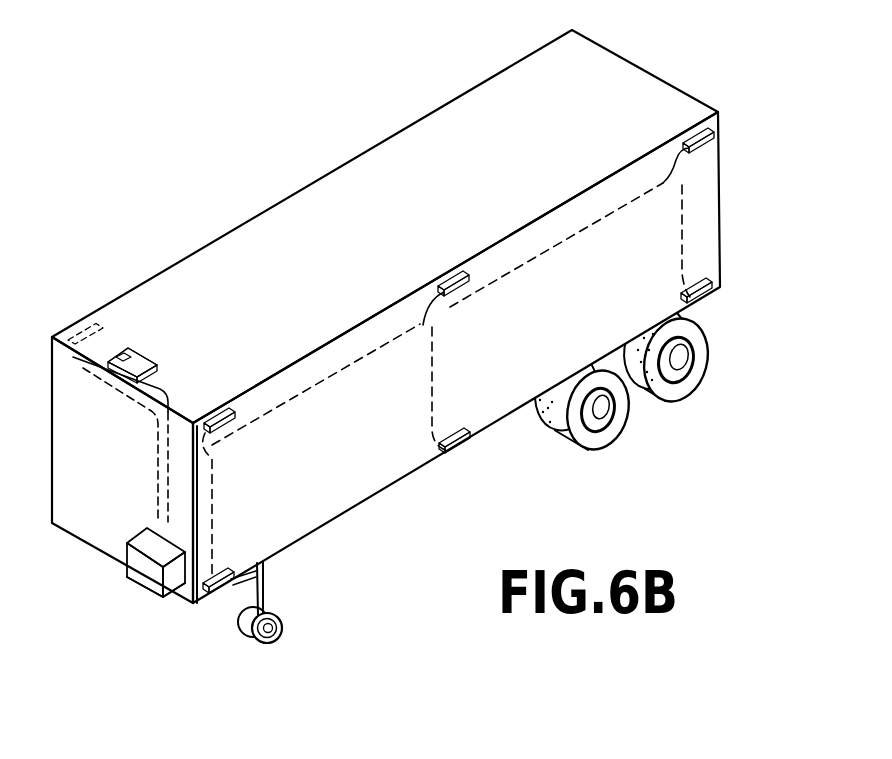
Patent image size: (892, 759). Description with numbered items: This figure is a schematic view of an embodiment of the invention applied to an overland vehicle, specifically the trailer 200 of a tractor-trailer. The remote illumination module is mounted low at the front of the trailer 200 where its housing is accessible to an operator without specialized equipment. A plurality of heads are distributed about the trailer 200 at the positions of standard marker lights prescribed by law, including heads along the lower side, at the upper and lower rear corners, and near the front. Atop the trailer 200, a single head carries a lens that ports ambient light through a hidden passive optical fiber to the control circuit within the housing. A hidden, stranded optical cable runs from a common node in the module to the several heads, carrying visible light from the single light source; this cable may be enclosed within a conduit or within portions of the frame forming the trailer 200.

The trailer 200 is at (492, 98).